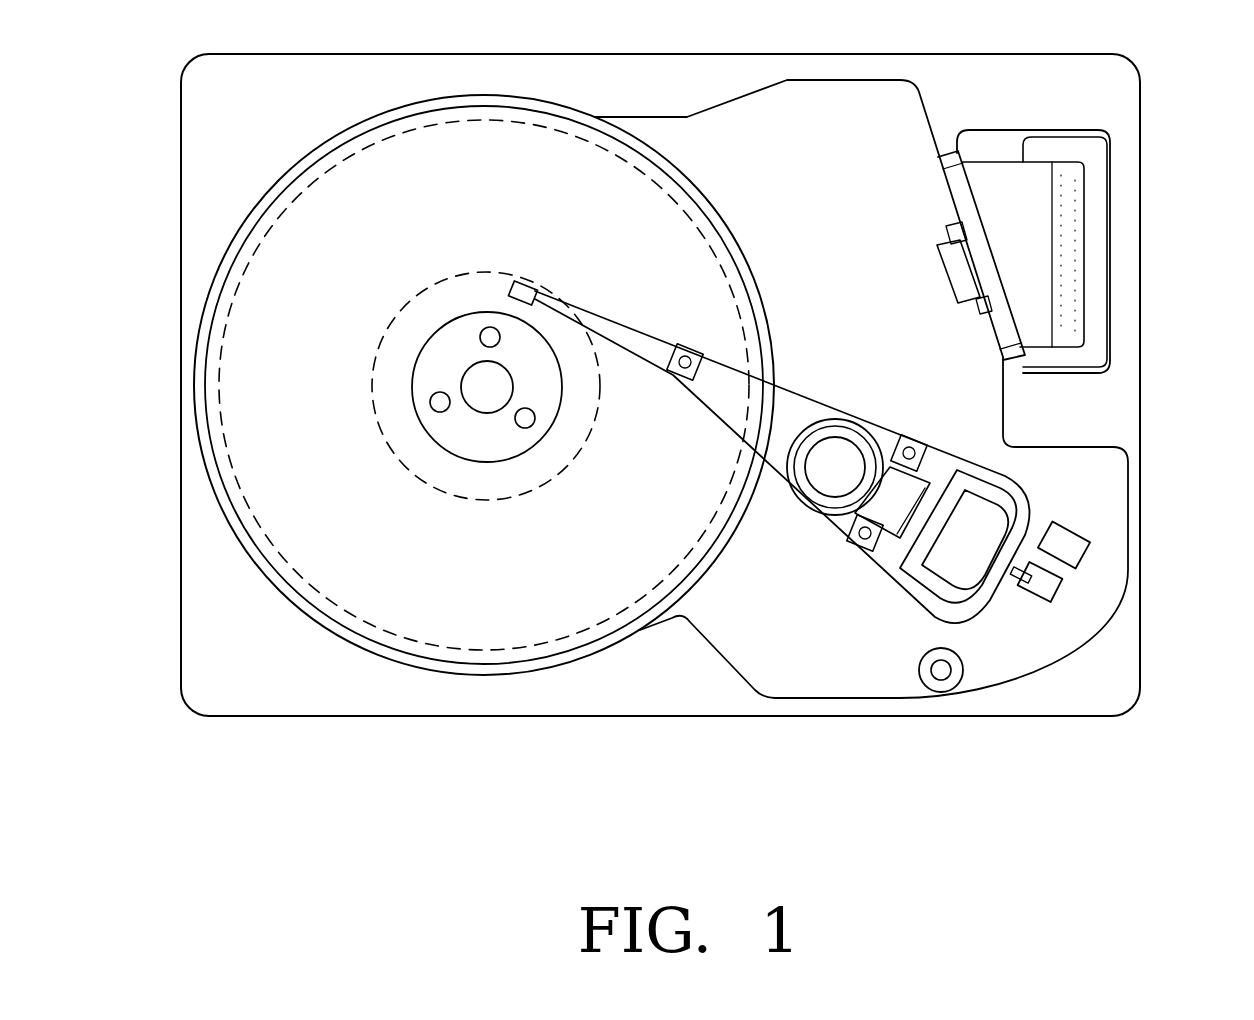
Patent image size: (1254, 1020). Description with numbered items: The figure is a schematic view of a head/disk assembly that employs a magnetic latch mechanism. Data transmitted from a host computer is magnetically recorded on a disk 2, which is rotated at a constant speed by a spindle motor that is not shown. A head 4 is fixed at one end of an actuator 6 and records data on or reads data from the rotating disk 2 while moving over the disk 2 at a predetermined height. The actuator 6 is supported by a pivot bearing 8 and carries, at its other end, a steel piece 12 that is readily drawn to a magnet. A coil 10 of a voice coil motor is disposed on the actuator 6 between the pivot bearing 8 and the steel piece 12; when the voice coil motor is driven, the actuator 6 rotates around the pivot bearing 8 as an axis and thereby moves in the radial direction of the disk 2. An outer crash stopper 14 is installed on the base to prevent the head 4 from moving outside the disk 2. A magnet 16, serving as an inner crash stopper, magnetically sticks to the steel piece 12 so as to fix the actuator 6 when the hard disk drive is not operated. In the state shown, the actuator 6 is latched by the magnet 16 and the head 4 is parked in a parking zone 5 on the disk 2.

The disk 2 is at (437, 630).
The head 4 is at (525, 284).
The parking zone 5 is at (390, 437).
The actuator 6 is at (782, 368).
The pivot bearing 8 is at (838, 468).
The coil 10 is at (958, 476).
The steel piece 12 is at (1050, 578).
The outer crash stopper 14 is at (941, 676).
The magnet 16 is at (1067, 535).